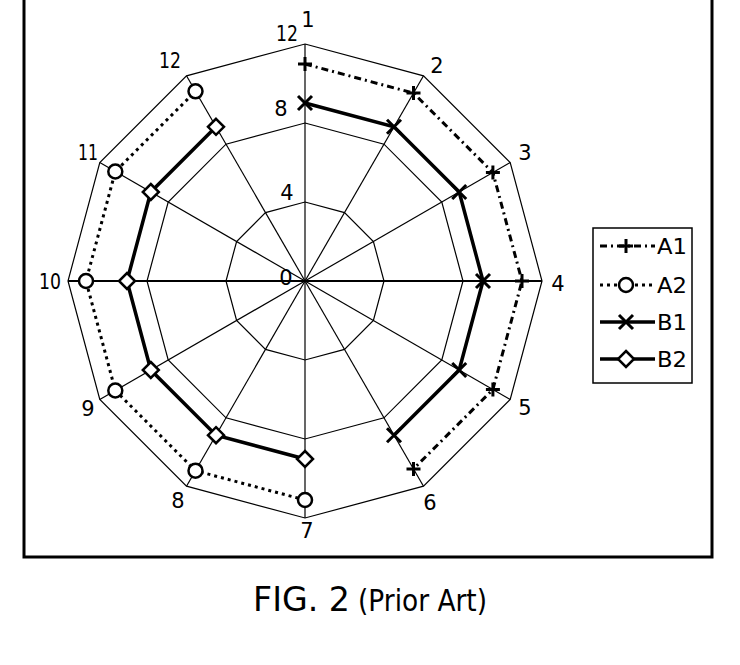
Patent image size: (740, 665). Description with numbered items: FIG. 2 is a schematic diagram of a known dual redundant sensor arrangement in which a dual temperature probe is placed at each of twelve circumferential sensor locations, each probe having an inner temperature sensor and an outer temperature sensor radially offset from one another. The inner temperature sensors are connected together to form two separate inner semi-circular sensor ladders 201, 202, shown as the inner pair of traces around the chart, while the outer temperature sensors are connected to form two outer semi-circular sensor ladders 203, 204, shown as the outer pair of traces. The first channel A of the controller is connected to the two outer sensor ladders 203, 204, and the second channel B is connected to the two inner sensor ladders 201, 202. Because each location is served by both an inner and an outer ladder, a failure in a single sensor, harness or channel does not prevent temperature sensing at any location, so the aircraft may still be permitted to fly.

The inner semi-circular sensor ladder 201 is at (420, 143).
The inner semi-circular sensor ladder 202 is at (190, 415).
The outer semi-circular sensor ladder 203 is at (475, 143).
The outer semi-circular sensor ladder 204 is at (135, 413).